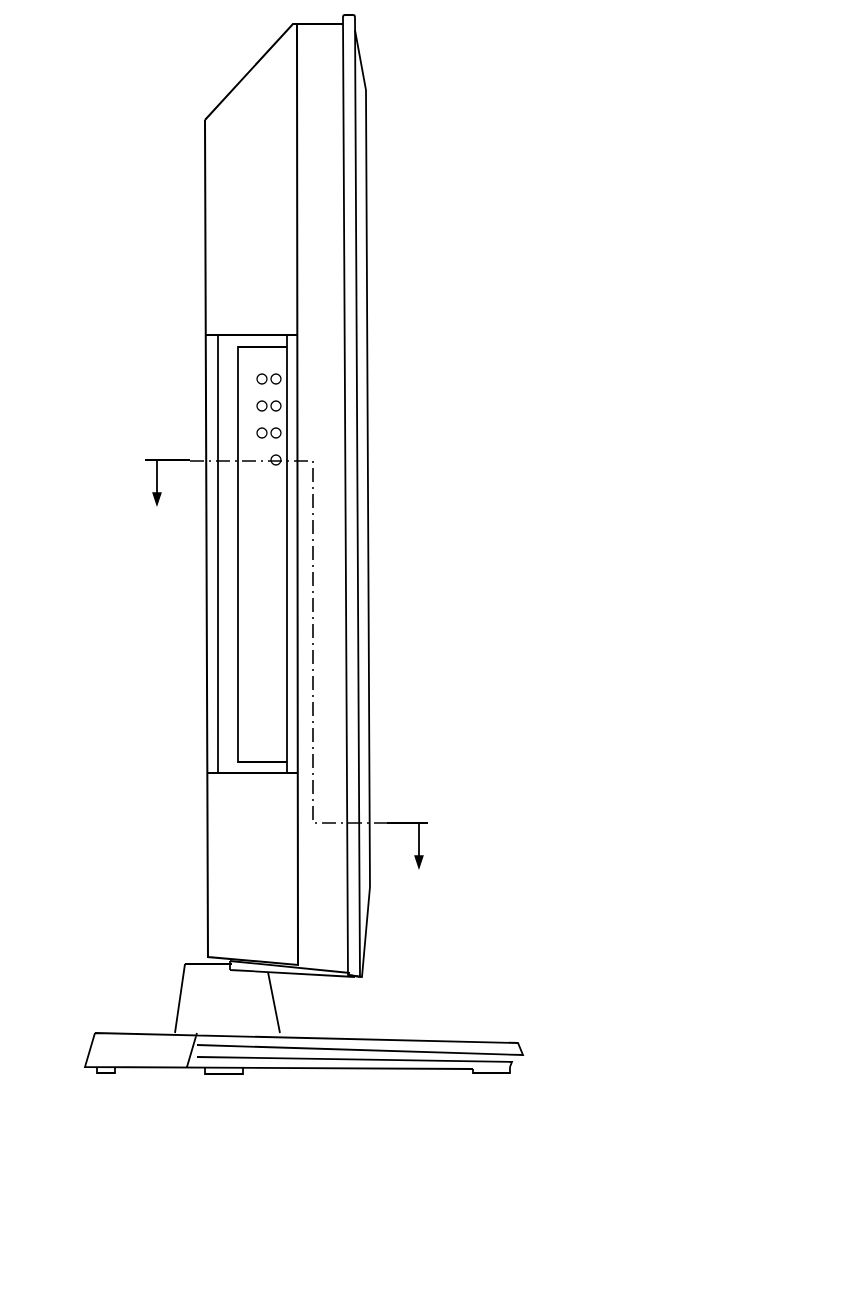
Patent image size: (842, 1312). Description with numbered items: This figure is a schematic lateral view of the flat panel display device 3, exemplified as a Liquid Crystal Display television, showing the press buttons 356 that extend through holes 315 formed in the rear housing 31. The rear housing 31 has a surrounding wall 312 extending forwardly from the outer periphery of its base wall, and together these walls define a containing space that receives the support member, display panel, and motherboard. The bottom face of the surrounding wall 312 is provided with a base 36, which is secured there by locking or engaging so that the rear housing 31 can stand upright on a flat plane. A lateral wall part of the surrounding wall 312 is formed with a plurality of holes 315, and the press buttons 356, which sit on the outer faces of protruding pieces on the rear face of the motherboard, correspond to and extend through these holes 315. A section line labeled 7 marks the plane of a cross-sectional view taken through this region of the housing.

The flat panel display device 3 is at (183, 177).
The rear housing 31 is at (198, 287).
The surrounding wall 312 is at (323, 157).
The holes 315 is at (257, 381).
The press buttons 356 is at (276, 373).
The base 36 is at (208, 988).
The section line 7- 7 is at (292, 664).